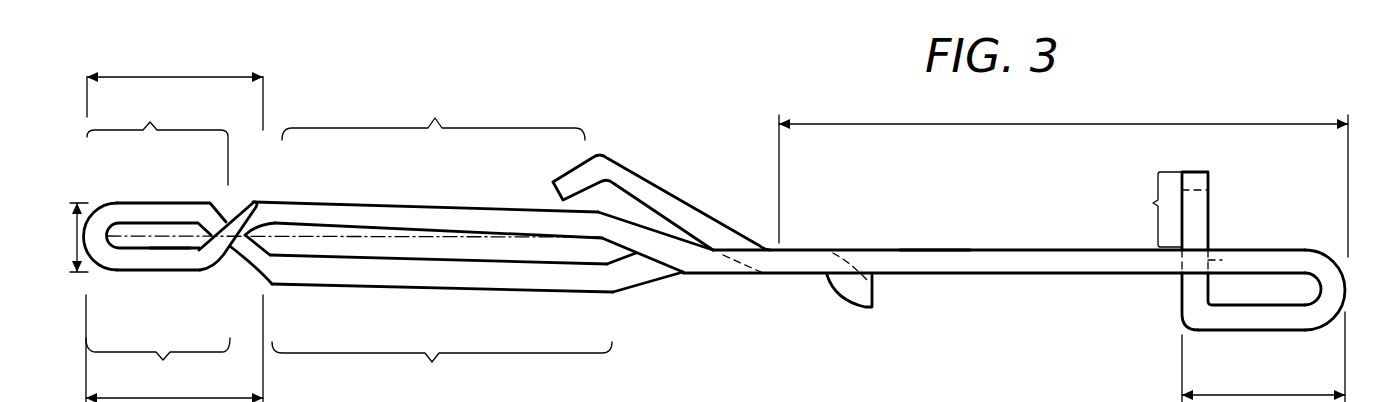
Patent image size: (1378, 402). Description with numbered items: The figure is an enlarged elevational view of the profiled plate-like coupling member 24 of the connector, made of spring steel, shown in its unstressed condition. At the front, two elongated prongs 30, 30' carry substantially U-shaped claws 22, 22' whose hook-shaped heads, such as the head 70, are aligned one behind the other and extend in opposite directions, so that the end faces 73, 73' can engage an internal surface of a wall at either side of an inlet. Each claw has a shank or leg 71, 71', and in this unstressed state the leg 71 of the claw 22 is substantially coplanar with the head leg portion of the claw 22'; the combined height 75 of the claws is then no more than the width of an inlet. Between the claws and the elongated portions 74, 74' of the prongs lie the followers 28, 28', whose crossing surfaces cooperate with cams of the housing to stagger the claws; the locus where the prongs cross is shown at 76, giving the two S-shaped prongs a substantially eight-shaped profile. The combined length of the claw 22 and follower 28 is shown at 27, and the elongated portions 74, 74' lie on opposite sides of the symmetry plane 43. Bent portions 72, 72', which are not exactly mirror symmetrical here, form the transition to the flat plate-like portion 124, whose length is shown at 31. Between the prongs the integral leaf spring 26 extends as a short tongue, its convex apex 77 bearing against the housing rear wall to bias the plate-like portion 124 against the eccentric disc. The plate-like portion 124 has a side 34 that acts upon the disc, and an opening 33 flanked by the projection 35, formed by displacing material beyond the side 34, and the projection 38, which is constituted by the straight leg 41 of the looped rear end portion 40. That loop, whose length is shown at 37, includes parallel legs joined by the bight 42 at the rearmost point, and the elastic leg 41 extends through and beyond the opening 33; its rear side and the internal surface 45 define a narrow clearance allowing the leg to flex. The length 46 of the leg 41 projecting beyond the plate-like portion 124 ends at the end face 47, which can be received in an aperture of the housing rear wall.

The claw 22 is at (157, 139).
The claw 22' is at (158, 365).
The coupling member 24 is at (669, 125).
The leaf spring 26 is at (676, 206).
The combined length of claw and follower 27 is at (166, 76).
The follower 28 is at (244, 292).
The follower 28' is at (249, 199).
The prong 30 is at (428, 197).
The prong 30' is at (441, 294).
The length of plate-like portion 31 is at (1053, 123).
The opening 33 is at (1005, 249).
The side of plate-like portion 34 is at (1050, 276).
The projection 35 is at (873, 298).
The length of looped end portion 37 is at (1263, 357).
The projection 38 is at (1180, 307).
The looped rear end portion 40 is at (1316, 247).
The straight leg 41 is at (1198, 293).
The bight 42 is at (1336, 284).
The symmetry plane 43 is at (305, 237).
The internal surface 45 is at (1217, 262).
The length of projecting leg portion 46 is at (1150, 209).
The end face of leg 47 is at (1197, 168).
The hook-shaped head 70 is at (110, 215).
The shank or leg 71 is at (161, 300).
The shank or leg 71' is at (173, 183).
The bent portion 72 is at (647, 204).
The bent portion 72' is at (688, 294).
The end face 73 is at (158, 196).
The end face 73' is at (161, 292).
The elongated portion 74 is at (433, 117).
The elongated portion 74' is at (442, 367).
The combined height of claws 75 is at (68, 273).
The crossing point 76 is at (258, 205).
The apex 77 is at (610, 160).
The plate-like portion 124 is at (935, 249).